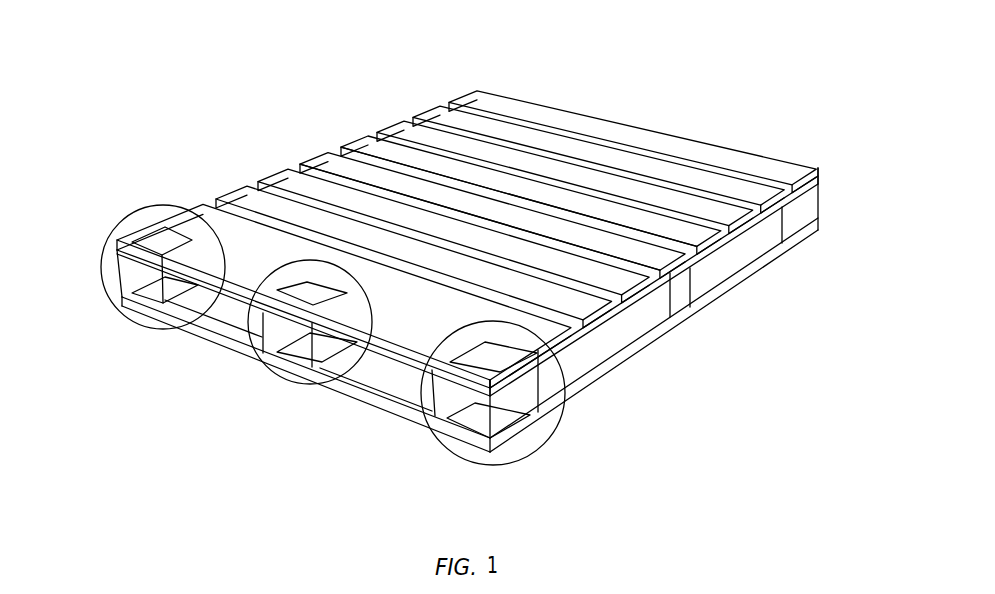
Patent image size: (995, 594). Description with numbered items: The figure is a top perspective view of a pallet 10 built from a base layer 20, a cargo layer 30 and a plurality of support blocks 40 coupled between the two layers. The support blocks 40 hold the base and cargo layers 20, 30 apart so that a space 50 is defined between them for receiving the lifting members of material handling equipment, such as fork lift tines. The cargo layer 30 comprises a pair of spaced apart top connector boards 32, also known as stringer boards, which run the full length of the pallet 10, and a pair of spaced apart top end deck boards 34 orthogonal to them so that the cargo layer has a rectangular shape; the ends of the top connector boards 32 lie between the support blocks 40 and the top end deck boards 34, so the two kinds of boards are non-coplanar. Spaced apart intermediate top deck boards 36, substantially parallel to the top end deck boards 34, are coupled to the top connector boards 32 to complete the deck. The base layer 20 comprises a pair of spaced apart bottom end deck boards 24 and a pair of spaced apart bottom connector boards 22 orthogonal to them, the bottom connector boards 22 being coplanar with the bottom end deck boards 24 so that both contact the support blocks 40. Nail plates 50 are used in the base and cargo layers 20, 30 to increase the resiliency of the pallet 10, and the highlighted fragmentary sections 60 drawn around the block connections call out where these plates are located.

The pallet 10 is at (463, 256).
The base layer 20 is at (470, 336).
The bottom connector boards 22 is at (640, 347).
The bottom end deck boards 24 is at (517, 437).
The cargo layer 30 is at (440, 215).
The top connector boards 32 is at (112, 250).
The top end deck boards 34 is at (500, 93).
The intermediate top deck boards 36 is at (397, 122).
The support blocks 40 is at (133, 278).
The nail plates 50 is at (223, 320).
The fragmentary sections 60 is at (170, 205).